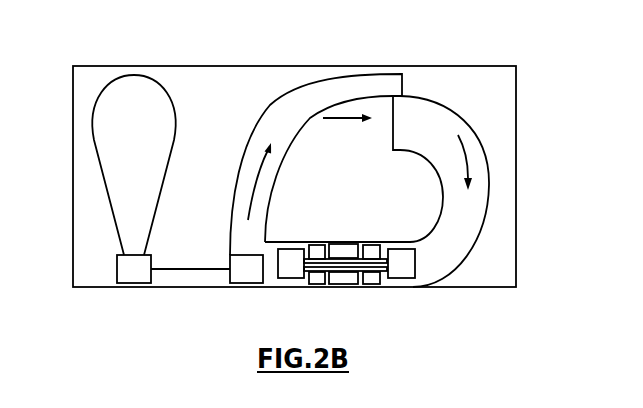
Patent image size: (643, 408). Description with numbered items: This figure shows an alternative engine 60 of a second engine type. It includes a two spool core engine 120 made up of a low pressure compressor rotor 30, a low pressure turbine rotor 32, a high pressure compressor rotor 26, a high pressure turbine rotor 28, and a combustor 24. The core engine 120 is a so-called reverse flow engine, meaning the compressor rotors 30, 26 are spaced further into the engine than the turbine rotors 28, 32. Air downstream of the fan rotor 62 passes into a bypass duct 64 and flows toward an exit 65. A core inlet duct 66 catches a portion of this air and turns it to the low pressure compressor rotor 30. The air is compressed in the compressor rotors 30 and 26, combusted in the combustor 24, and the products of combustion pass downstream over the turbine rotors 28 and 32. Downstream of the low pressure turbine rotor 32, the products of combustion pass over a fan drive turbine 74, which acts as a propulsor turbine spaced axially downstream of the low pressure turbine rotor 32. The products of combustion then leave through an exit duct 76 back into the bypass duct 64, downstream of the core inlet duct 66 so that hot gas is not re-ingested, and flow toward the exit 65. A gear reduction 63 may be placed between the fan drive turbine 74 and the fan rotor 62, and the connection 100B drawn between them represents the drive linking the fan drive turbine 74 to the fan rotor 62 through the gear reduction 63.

The alternative engine 60 is at (552, 107).
The exit 65 is at (497, 92).
The fan rotor 62 is at (147, 135).
The gear reduction 63 is at (134, 273).
The fluid conduit 100B is at (193, 278).
The fan drive turbine 74 is at (248, 274).
The bypass duct 64 is at (217, 108).
The exit duct 76 is at (286, 134).
The core inlet duct 66 is at (442, 138).
The low pressure turbine rotor 32 is at (291, 265).
The low pressure compressor rotor 30 is at (402, 278).
The two spool core engine 120 is at (349, 262).
The combustor 24 is at (342, 252).
The high pressure compressor rotor 26 is at (373, 251).
The high pressure turbine rotor 28 is at (306, 301).